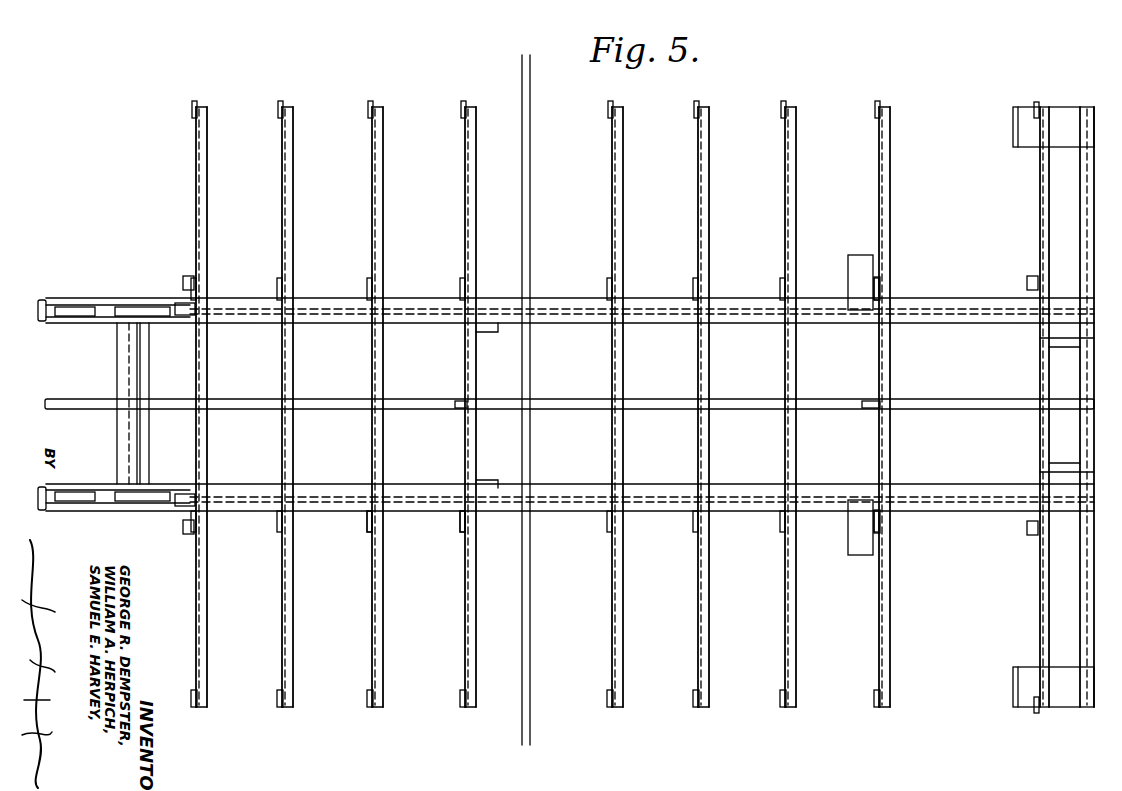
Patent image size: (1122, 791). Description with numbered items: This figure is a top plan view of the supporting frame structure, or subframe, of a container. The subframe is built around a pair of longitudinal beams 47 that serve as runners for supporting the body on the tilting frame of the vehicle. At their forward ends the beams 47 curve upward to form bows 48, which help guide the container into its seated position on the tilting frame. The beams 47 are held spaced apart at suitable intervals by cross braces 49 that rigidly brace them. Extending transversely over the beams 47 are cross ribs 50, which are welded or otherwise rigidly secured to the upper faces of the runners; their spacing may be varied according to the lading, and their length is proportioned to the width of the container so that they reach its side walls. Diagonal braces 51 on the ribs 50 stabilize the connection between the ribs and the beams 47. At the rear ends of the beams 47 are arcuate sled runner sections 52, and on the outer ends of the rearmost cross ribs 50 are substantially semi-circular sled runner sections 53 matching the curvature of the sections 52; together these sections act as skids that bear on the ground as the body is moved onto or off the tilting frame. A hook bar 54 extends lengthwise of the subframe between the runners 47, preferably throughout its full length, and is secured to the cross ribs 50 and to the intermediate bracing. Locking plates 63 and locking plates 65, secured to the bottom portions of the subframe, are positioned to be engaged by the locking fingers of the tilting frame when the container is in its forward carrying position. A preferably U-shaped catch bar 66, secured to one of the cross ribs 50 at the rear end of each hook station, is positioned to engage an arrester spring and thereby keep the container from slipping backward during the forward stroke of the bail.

The longitudinal beams 47 is at (562, 308).
The bows 48 is at (40, 301).
The cross braces 49 is at (136, 369).
The cross ribs 50 is at (464, 213).
The diagonal braces 51 is at (458, 527).
The sled runner sections 52 is at (1060, 338).
The sled runner sections 53 is at (1068, 112).
The hook bar 54 is at (655, 409).
The locking plates 63 is at (493, 332).
The locking plates 65 is at (855, 256).
The catch bar 66 is at (182, 282).